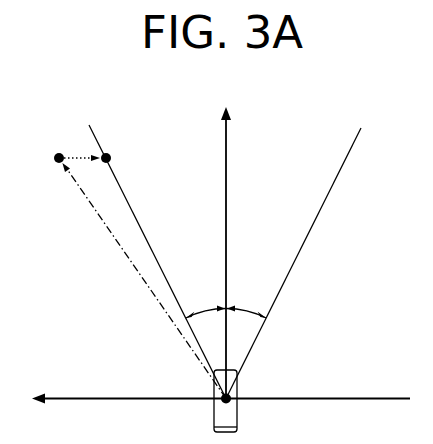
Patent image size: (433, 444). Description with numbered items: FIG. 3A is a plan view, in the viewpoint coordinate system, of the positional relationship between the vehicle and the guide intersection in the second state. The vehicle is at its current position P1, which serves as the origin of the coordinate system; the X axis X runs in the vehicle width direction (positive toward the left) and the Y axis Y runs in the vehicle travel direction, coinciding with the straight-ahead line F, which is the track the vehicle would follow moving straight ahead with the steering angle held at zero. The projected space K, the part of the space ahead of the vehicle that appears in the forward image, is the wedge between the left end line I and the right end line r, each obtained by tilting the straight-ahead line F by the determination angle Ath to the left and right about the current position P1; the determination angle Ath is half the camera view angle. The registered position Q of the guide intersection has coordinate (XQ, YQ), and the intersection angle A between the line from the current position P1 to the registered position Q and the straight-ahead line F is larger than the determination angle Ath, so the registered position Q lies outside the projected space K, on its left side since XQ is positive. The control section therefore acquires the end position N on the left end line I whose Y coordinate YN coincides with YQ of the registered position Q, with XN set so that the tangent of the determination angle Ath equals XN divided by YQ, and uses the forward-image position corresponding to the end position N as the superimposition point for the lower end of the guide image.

The current position P1 is at (214, 405).
The end position N is at (108, 153).
The registered position Q is at (60, 164).
The projected space K is at (177, 158).
The left end line I is at (152, 250).
The right end line r is at (307, 235).
The determination angle Ath is at (191, 313).
The intersection angle A is at (223, 338).
The straight-ahead line F is at (228, 353).
The X axis X is at (221, 411).
The Y axis Y is at (214, 248).